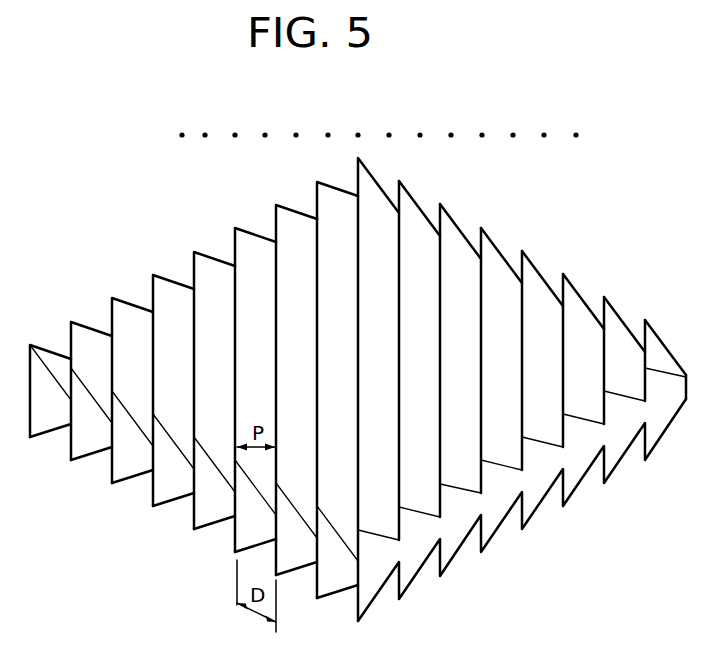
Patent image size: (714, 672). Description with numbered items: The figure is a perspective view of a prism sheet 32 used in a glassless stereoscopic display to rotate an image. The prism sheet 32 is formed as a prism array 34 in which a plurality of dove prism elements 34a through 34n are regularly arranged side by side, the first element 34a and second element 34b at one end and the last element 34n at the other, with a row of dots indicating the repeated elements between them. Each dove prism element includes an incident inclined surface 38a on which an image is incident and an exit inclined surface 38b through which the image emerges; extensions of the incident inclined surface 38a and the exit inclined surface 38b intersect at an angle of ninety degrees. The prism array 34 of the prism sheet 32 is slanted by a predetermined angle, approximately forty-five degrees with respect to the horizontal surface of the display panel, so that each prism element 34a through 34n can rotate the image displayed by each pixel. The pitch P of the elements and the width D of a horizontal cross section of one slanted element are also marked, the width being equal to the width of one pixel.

The prism sheet 32 is at (369, 654).
The prism array 34 is at (640, 116).
The dove prism element 34a is at (58, 354).
The dove prism element 34b is at (93, 338).
The dove prism element 34n is at (657, 348).
The incident inclined surface 38a is at (176, 500).
The exit inclined surface 38b is at (175, 402).